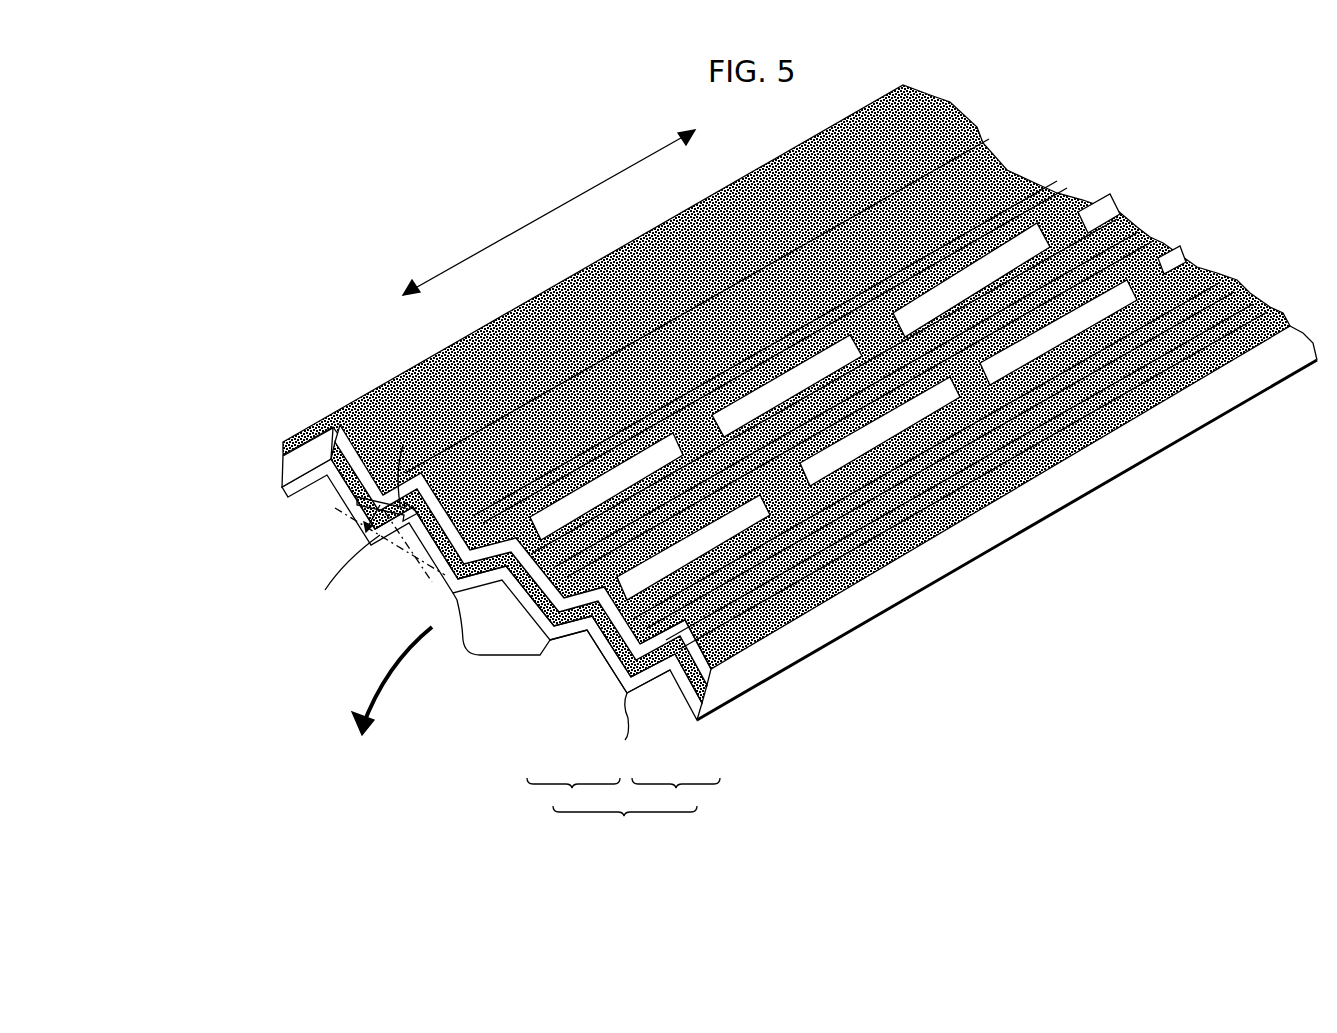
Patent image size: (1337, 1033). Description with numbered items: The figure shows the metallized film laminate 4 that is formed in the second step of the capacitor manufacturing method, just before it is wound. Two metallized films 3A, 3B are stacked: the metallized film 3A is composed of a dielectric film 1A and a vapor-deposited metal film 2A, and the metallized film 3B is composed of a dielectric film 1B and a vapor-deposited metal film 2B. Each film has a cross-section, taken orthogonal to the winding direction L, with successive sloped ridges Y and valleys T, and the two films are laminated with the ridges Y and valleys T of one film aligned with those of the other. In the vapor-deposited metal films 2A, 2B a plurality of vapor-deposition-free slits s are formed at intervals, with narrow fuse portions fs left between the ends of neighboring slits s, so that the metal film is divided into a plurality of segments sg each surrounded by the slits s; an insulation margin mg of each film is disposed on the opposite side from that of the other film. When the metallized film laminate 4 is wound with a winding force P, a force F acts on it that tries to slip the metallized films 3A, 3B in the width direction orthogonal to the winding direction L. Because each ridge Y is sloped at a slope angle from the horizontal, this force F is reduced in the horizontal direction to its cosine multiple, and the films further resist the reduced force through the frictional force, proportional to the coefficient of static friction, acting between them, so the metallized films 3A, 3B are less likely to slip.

The dielectric film 1A is at (643, 658).
The dielectric film 1B is at (555, 640).
The vapor-deposited metal film 2A is at (673, 660).
The vapor-deposited metal film 2B is at (607, 655).
The metallized film 3A is at (676, 795).
The metallized film 3B is at (573, 795).
The metallized film laminate 4 is at (625, 828).
The segment sg is at (679, 597).
The fuse portion fs is at (650, 372).
The vapor-deposition-free slit s is at (1133, 365).
The insulation margin mg is at (290, 488).
The ridge Y is at (330, 405).
The valley T is at (542, 675).
The winding direction L is at (549, 212).
The winding force P is at (378, 683).
The force F is at (360, 517).